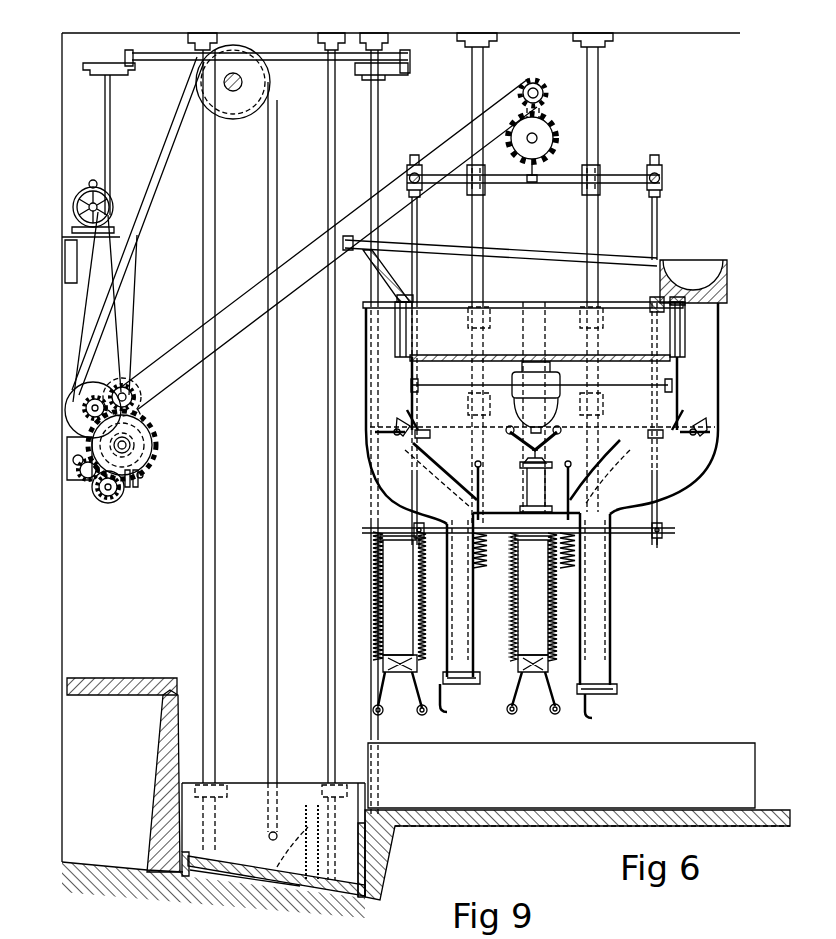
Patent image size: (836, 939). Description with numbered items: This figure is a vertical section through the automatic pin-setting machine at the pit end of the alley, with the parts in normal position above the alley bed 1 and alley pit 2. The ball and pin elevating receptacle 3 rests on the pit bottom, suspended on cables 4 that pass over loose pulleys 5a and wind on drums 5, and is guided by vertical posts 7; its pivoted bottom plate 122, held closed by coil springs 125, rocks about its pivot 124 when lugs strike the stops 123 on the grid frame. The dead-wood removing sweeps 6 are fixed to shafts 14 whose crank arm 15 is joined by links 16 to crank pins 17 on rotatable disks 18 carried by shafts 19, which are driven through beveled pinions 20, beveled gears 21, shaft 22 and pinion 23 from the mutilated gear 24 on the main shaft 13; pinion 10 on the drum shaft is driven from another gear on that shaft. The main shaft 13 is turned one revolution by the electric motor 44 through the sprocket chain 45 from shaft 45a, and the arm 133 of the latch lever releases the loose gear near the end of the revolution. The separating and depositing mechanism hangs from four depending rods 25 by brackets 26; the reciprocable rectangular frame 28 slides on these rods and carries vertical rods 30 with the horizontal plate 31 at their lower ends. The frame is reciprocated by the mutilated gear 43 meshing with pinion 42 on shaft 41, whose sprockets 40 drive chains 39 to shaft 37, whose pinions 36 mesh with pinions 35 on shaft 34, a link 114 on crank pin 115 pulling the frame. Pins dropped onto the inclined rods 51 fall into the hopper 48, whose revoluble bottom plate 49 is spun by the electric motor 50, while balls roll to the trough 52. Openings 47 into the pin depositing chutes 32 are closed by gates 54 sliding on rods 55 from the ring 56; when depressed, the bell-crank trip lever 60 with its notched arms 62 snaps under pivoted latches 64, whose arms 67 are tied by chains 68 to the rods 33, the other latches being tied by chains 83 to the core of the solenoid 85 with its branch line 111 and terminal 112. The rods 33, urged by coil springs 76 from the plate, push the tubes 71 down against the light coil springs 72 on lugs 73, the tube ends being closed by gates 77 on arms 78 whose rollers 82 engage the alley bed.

The alley bed 1 is at (777, 820).
The alley pit 2 is at (232, 878).
The ball and pin elevating receptacle 3 is at (238, 795).
The cables 4 is at (136, 230).
The drums 5 is at (78, 403).
The loose pulleys 5a is at (237, 112).
The dead-wood removing sweeps 6 is at (667, 747).
The vertical posts 7 is at (213, 478).
The pinion 10 is at (87, 415).
The main shaft 13 is at (127, 447).
The shafts 14 is at (375, 127).
The crank arm 15 is at (392, 66).
The links 16 is at (293, 60).
The crank pins 17 is at (132, 52).
The rotatable disks 18 is at (100, 70).
The shafts 19 is at (110, 128).
The beveled pinions 20 is at (92, 477).
The beveled gears 21 is at (102, 497).
The shaft 22 is at (117, 492).
The pinion 23 is at (110, 498).
The mutilated gear 24 is at (140, 476).
The vertically depending rods 25 is at (478, 62).
The brackets 26 is at (583, 308).
The reciprocable rectangular frame 28 is at (620, 178).
The vertical rods 30 is at (419, 225).
The horizontal plate 31 is at (395, 535).
The pin depositing chutes 32 is at (720, 348).
The rods 33 is at (481, 468).
The shaft 34 is at (528, 140).
The pinions 35 is at (557, 128).
The pinions 36 is at (548, 88).
The shaft 37 is at (537, 85).
The chains 39 is at (445, 167).
The sprockets 40 is at (138, 398).
The shaft 41 is at (128, 388).
The pinion 42 is at (125, 392).
The mutilated gear 43 is at (153, 423).
The electric motor 44 is at (88, 190).
The sprocket chain 45 is at (121, 307).
The shaft 45a is at (100, 198).
The openings 47 is at (412, 340).
The hopper 48 is at (381, 272).
The revoluble bottom plate 49 is at (570, 355).
The electric motor 50 is at (537, 387).
The rods or bars 51 is at (618, 256).
The trough 52 is at (712, 273).
The gates 54 is at (411, 387).
The rods 55 is at (400, 332).
The ring 56 is at (398, 300).
The bell-crank trip lever 60 is at (383, 433).
The notched upwardly extending arms 62 is at (398, 425).
The pivoted latches 64 is at (411, 427).
The inwardly extending arms 67 is at (426, 436).
The chains 68 is at (443, 462).
The tubes 71 is at (471, 662).
The light coil springs 72 is at (376, 578).
The lugs 73 is at (517, 655).
The coil springs 76 is at (485, 553).
The gates 77 is at (400, 673).
The arms 78 is at (443, 708).
The rollers 82 is at (420, 715).
The chains 83 is at (503, 428).
The solenoid 85 is at (537, 488).
The branch line 111 is at (127, 488).
The terminal 112 is at (136, 488).
The link 114 is at (540, 172).
The crank pin 115 is at (543, 113).
The pivoted bottom plate 122 is at (252, 877).
The stops 123 is at (352, 250).
The pivot 124 is at (285, 850).
The coil springs 125 is at (308, 827).
The arm 133 is at (140, 415).